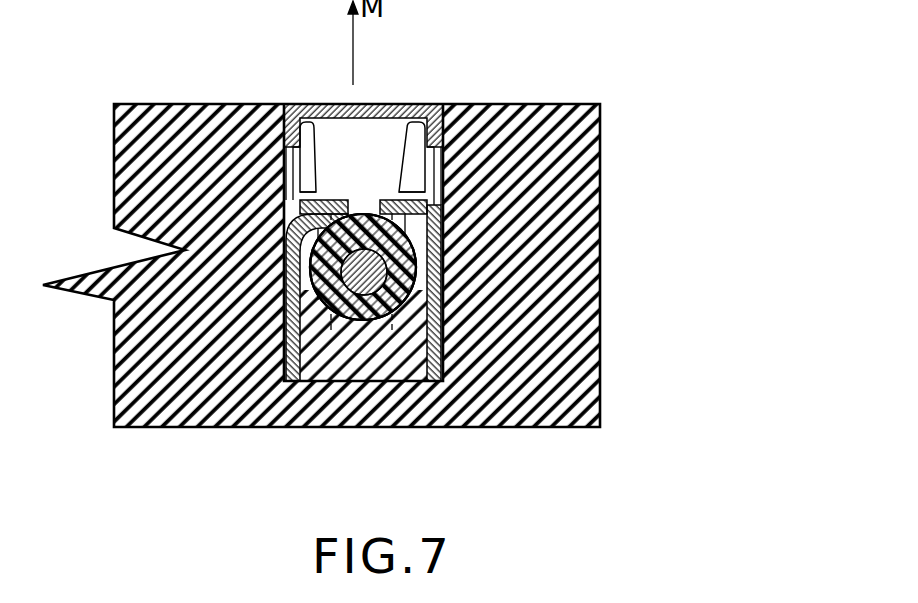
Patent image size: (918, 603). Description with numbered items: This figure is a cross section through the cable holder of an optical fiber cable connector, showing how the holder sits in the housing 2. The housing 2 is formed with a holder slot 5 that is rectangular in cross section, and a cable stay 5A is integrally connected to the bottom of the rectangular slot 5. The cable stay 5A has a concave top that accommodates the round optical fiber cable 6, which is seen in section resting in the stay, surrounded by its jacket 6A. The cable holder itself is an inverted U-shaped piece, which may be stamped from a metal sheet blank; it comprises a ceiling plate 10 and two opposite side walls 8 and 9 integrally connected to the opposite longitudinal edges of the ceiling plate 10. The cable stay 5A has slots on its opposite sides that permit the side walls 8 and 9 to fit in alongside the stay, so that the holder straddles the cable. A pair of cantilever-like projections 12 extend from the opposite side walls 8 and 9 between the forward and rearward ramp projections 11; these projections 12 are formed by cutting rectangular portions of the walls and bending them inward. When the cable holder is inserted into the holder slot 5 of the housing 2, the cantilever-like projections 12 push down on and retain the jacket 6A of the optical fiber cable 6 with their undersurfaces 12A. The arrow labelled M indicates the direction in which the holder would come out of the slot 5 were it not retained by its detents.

The housing 2 is at (163, 107).
The holder slot 5 is at (393, 128).
The cable stay 5A is at (346, 318).
The optical fiber cable 6 is at (356, 296).
The jacket 6A is at (379, 322).
The side wall 8 is at (298, 318).
The side wall 9 is at (418, 263).
The ceiling plate 10 is at (337, 107).
The ramp projection 11 is at (416, 233).
The cantilever-like projection 12 is at (422, 107).
The undersurface 12A is at (305, 107).